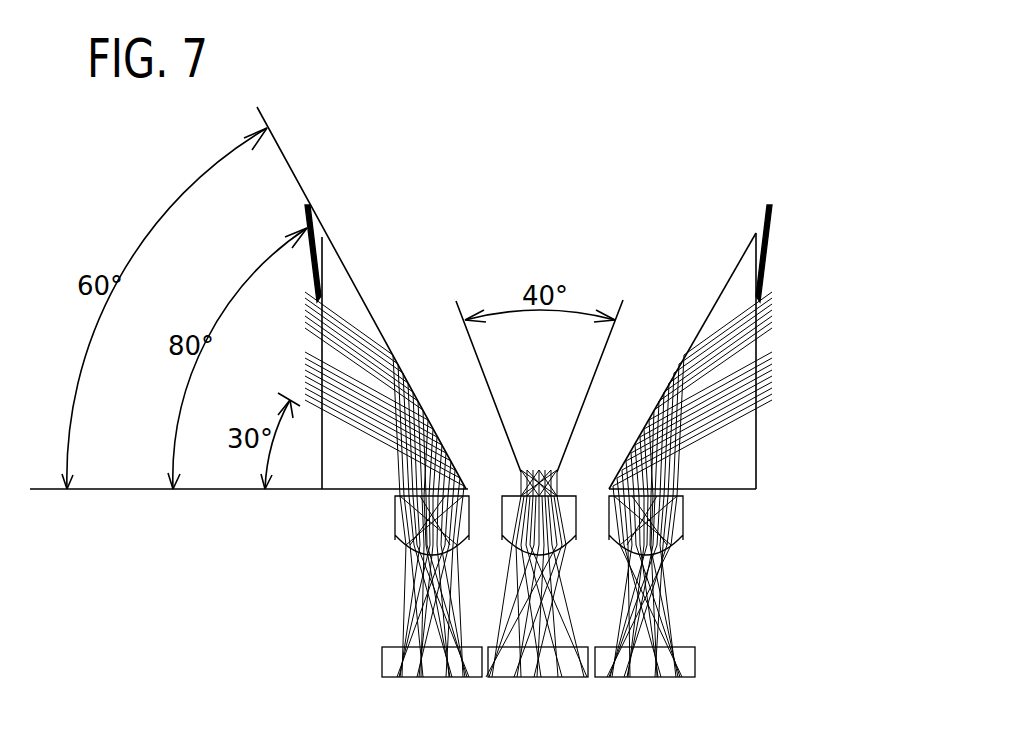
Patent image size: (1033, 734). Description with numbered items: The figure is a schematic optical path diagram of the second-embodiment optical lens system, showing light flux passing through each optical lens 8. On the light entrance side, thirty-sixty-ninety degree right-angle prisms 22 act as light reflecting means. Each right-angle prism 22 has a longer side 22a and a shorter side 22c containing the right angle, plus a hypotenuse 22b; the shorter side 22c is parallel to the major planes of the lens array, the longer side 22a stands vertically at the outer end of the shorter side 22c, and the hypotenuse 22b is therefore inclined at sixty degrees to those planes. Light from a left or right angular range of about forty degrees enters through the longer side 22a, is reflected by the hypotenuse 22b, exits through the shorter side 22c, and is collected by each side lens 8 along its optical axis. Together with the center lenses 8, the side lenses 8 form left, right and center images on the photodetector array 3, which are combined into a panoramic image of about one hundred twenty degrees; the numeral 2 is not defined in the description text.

The lighting device 2 is at (830, 283).
The photodetector array 3 is at (687, 664).
The optical lens 8 is at (405, 534).
The right-angle prism 22 is at (742, 475).
The longer side 22a is at (782, 447).
The hypotenuse 22b is at (688, 303).
The shorter side 22c is at (732, 513).